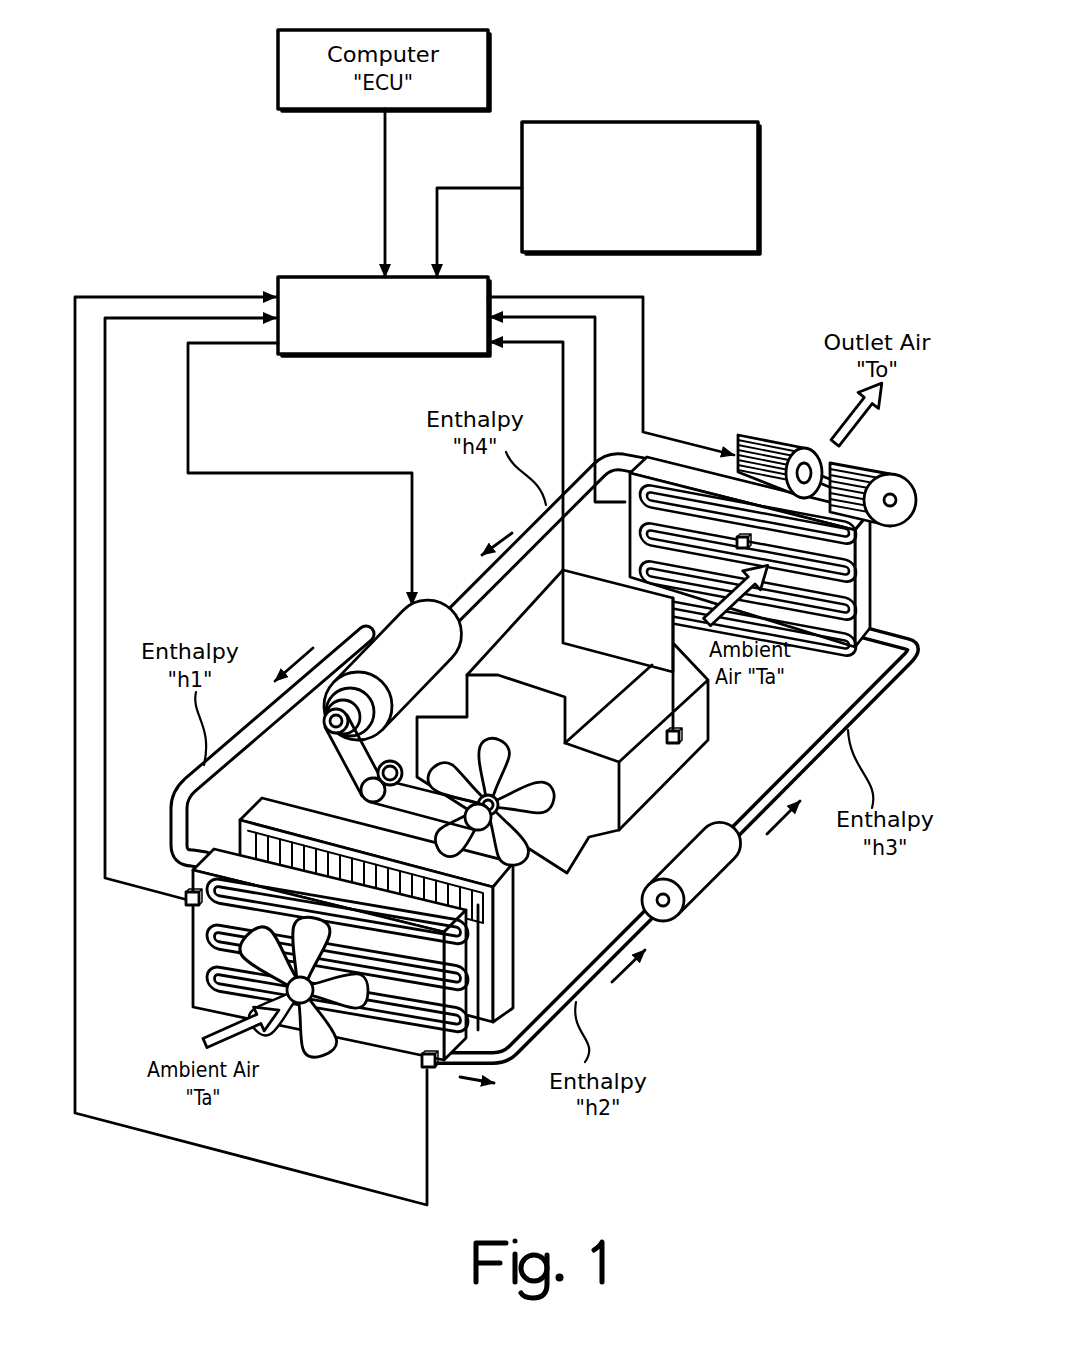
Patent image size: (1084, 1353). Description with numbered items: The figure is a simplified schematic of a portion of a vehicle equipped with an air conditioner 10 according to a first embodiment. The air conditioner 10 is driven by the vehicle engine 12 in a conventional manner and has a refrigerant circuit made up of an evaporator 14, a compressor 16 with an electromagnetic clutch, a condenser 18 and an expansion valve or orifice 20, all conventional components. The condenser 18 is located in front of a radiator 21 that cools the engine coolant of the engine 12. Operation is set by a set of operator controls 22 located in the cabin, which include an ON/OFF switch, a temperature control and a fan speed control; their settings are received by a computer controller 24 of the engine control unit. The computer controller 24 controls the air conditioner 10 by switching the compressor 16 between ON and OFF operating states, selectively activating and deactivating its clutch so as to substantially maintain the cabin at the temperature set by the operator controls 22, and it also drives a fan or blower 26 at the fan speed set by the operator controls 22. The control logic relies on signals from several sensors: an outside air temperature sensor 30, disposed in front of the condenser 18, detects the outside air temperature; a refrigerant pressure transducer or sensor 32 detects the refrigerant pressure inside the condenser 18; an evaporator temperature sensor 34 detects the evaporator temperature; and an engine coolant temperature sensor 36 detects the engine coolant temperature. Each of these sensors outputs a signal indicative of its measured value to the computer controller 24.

The air conditioner 10 is at (712, 404).
The vehicle engine 12 is at (712, 725).
The evaporator 14 is at (866, 562).
The compressor 16 is at (380, 632).
The condenser 18 is at (392, 1062).
The expansion valve or orifice 20 is at (707, 897).
The radiator 21 is at (522, 925).
The operator controls 22 is at (690, 122).
The computer controller 24 is at (296, 276).
The fan or blower 26 is at (782, 431).
The outside air temperature sensor 30 is at (188, 907).
The refrigerant pressure transducer or sensor 32 is at (436, 1076).
The evaporator temperature sensor 34 is at (752, 548).
The engine coolant temperature sensor 36 is at (686, 740).